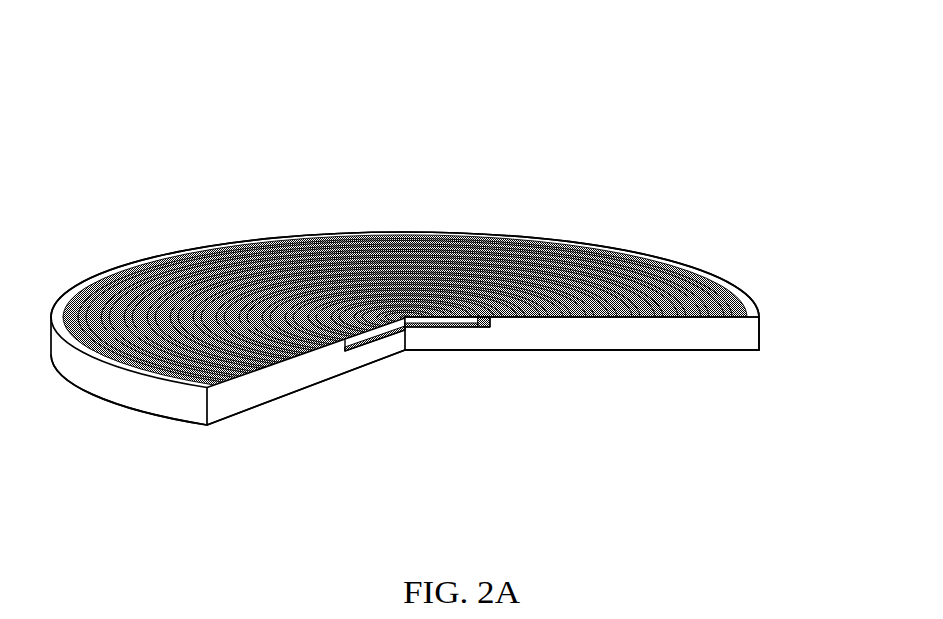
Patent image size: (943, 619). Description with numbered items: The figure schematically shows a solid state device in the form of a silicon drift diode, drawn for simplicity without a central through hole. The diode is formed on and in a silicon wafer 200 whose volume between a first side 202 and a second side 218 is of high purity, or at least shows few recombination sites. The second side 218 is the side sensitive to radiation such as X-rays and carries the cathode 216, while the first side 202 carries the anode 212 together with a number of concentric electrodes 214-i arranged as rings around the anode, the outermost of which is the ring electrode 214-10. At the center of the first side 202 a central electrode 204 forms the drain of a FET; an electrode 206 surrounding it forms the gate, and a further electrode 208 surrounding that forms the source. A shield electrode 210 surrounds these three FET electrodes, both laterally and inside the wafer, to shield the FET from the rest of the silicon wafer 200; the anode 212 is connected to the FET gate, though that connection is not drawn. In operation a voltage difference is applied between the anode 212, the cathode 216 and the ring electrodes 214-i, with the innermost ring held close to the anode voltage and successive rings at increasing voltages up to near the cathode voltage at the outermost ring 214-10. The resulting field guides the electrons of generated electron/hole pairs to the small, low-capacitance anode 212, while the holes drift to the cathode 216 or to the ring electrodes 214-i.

The silicon wafer 200 is at (686, 170).
The first side 202 is at (120, 248).
The central electrode 204 is at (405, 316).
The electrode (gate of FET) 206 is at (432, 317).
The electrode (source of FET) 208 is at (460, 316).
The shield electrode 210 is at (487, 317).
The anode 212 is at (503, 318).
The concentric electrodes 214-i is at (525, 318).
The outermost concentric electrode 214-10 is at (746, 318).
The cathode 216 is at (450, 349).
The second side 218 is at (150, 448).